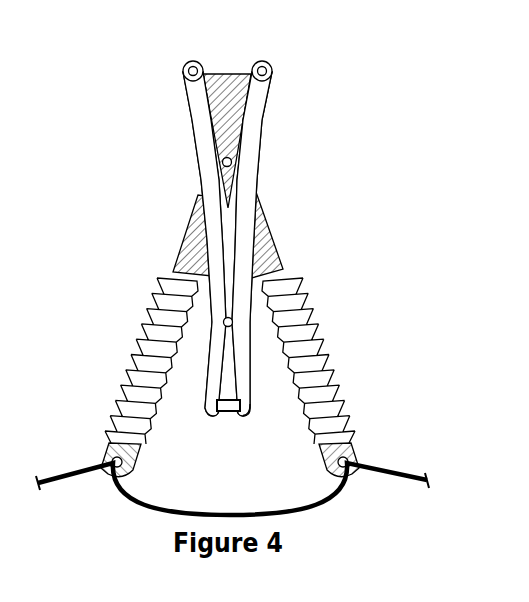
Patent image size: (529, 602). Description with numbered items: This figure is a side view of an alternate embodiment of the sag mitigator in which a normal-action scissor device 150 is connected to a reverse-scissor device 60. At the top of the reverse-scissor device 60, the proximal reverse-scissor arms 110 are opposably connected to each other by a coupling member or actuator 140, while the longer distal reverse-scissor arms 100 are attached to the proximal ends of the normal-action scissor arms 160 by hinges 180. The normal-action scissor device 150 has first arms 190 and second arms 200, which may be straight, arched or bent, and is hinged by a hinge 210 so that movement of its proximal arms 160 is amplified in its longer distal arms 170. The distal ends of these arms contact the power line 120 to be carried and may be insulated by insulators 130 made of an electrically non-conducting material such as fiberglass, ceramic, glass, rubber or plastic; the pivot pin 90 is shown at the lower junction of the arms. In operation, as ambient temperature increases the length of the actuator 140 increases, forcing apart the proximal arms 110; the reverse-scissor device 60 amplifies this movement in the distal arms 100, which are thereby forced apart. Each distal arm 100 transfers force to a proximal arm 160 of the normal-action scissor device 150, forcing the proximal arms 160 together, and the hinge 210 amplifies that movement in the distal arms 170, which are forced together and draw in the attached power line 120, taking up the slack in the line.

The reverse-scissor device 60 is at (205, 360).
The pivot pin 90 is at (232, 320).
The distal reverse-scissor arms 100 is at (255, 150).
The proximal reverse-scissor arms 110 is at (253, 406).
The power line 120 is at (403, 474).
The insulators 130 is at (112, 396).
The coupling member or actuator 140 is at (240, 398).
The normal-action scissor device 150 is at (232, 219).
The proximal normal-action scissor arms 160 is at (243, 110).
The distal normal-action scissor arms 170 is at (350, 458).
The hinges 180 is at (188, 72).
The first arms 190 is at (273, 228).
The second arms 200 is at (187, 230).
The hinge 210 is at (231, 165).